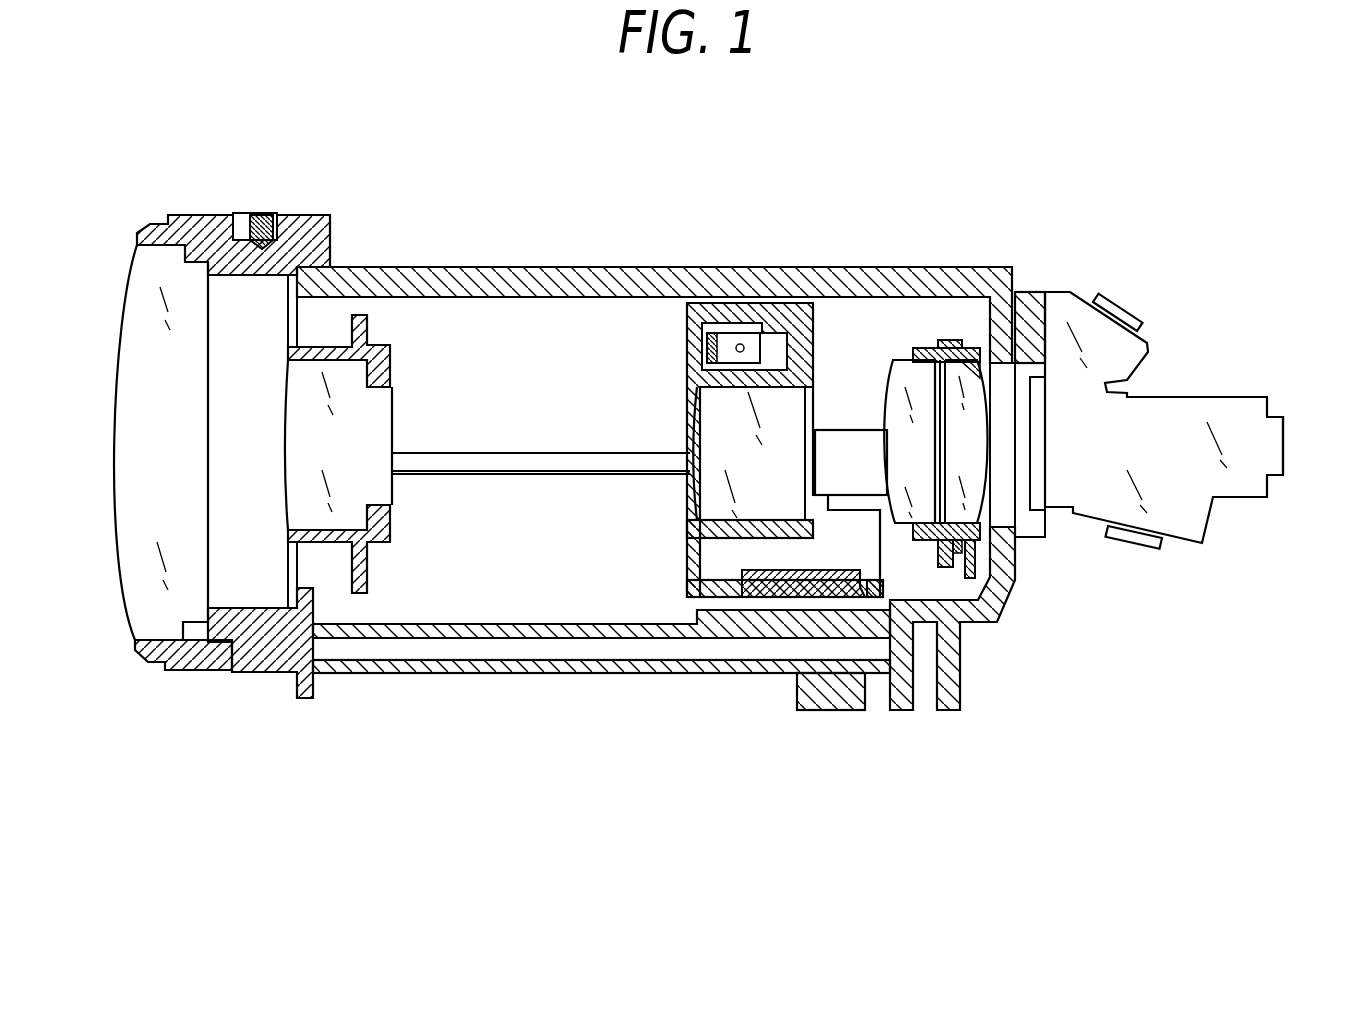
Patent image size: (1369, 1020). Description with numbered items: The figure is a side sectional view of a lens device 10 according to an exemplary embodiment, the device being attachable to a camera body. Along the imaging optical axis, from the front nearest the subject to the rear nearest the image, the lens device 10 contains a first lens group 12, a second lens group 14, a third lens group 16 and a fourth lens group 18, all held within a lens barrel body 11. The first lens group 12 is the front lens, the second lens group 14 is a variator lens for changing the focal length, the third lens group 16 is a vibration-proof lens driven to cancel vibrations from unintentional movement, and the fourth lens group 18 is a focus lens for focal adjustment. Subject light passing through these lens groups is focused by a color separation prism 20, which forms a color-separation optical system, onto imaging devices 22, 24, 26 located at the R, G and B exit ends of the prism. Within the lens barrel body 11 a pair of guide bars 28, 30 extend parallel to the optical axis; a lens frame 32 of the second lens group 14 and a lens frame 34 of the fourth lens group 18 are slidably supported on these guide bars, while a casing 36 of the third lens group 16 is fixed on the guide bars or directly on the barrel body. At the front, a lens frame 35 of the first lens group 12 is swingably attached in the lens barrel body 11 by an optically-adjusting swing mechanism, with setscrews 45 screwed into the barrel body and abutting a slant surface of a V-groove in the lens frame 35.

The lens device 10 is at (760, 191).
The lens barrel body 11 is at (570, 265).
The first lens group 12 is at (140, 462).
The second lens group 14 is at (313, 445).
The third lens group 16 is at (700, 410).
The fourth lens group 18 is at (887, 381).
The color separation prism 20 is at (1188, 391).
The imaging device 22 is at (1133, 540).
The imaging device 24 is at (1283, 445).
The imaging device 26 is at (1115, 308).
The guide bar 28 is at (560, 465).
The guide bar 30 is at (541, 463).
The lens frame 32 is at (393, 368).
The lens frame 34 is at (927, 340).
The lens frame 35 is at (197, 215).
The casing 36 is at (686, 338).
The setscrew 45 is at (258, 213).